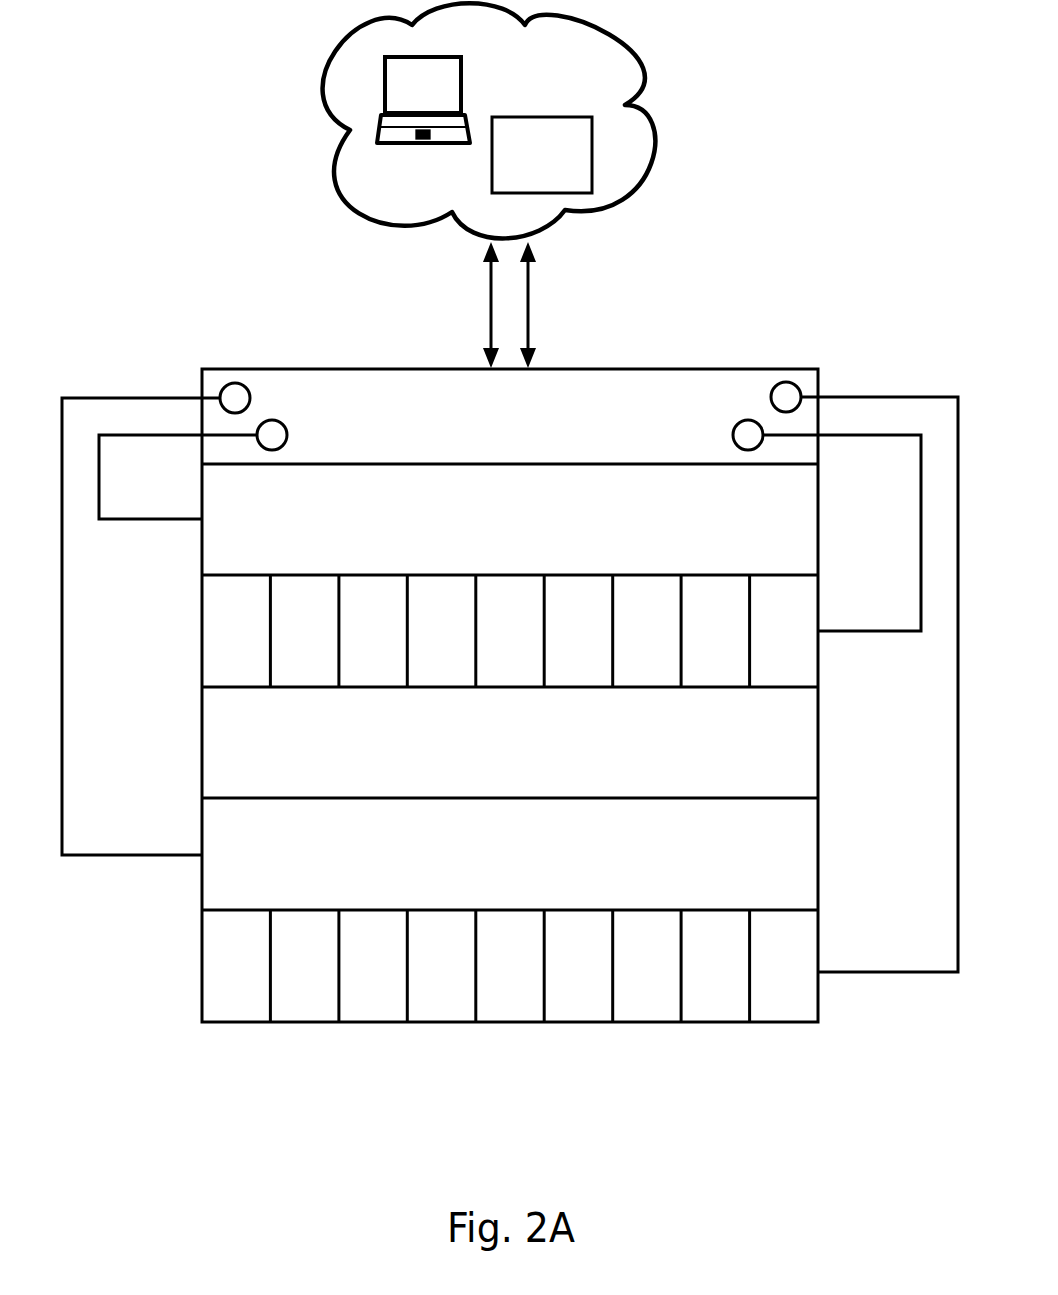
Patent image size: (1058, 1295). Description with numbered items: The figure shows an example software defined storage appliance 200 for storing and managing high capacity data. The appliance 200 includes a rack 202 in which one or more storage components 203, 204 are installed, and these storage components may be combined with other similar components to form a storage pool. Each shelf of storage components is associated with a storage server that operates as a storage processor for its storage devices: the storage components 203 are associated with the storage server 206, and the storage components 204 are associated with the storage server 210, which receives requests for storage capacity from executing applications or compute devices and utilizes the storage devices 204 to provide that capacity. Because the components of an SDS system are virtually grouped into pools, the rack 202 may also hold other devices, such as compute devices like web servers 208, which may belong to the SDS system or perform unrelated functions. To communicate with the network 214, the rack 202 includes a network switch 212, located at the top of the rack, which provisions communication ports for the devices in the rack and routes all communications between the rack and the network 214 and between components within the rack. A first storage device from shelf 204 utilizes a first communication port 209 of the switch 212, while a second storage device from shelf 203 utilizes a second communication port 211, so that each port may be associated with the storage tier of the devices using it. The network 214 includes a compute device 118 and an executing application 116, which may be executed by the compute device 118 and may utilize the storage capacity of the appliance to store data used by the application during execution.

The software defined storage appliance 200 is at (118, 349).
The rack 202 is at (820, 538).
The storage components 203 is at (192, 966).
The storage devices 204 is at (192, 630).
The storage server 206 is at (528, 886).
The web servers 208 is at (528, 776).
The first communication port 209 is at (748, 420).
The storage server 210 is at (528, 552).
The second communication port 211 is at (786, 382).
The network switch 212 is at (528, 456).
The network 214 is at (582, 54).
The compute device 118 is at (467, 113).
The application 116 is at (587, 186).